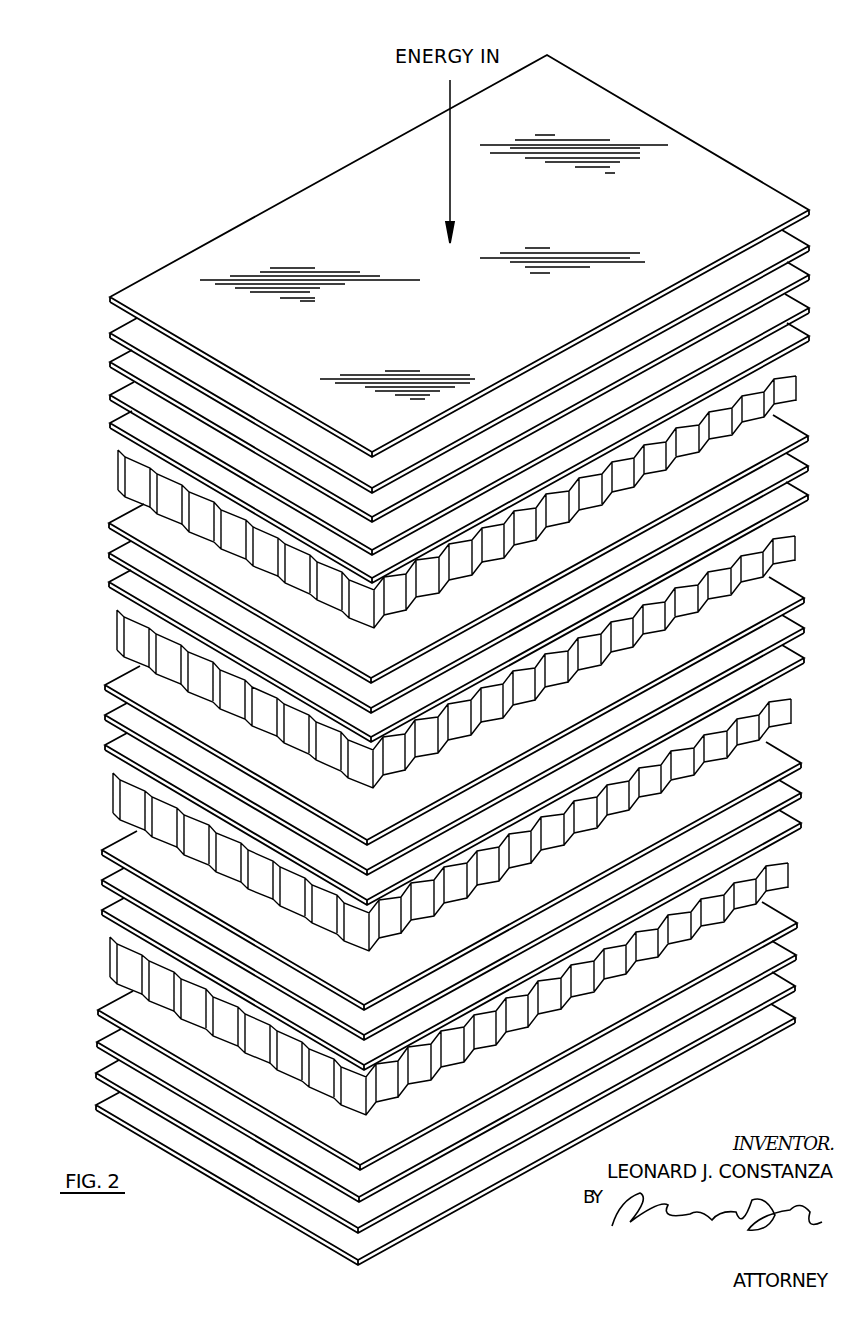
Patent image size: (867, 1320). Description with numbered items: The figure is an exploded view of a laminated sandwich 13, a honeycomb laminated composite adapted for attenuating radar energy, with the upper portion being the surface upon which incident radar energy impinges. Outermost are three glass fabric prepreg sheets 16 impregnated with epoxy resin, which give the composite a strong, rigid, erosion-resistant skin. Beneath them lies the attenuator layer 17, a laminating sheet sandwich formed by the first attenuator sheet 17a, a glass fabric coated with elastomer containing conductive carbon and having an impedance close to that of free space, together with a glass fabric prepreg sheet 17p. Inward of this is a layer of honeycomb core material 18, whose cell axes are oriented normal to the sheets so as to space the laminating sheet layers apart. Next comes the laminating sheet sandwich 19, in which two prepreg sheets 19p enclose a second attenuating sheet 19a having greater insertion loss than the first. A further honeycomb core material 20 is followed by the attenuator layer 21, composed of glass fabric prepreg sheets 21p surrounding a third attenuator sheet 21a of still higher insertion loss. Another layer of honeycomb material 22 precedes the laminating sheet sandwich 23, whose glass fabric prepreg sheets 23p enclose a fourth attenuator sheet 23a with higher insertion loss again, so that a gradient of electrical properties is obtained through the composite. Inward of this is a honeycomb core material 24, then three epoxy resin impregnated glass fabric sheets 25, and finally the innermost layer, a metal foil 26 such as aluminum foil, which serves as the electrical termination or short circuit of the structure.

The laminated sandwich 13 is at (235, 220).
The glass fabric prepreg sheets 16 is at (128, 358).
The laminating sheet sandwich (attenuator layer) 17 is at (62, 380).
The first attenuator sheet 17a is at (110, 395).
The glass fabric prepreg sheet 17p is at (110, 423).
The honeycomb core material 18 is at (128, 471).
The laminating sheet sandwich 19 is at (62, 508).
The prepreg sheets 19p is at (109, 523).
The second attenuating sheet 19a is at (109, 553).
The honeycomb core material 20 is at (125, 633).
The attenuator layer 21 is at (62, 670).
The glass fabric prepreg sheets 21p is at (105, 685).
The third attenuator sheet 21a is at (105, 715).
The honeycomb material layer 22 is at (120, 796).
The laminating sheet sandwich 23 is at (55, 834).
The glass fabric prepreg sheets 23p is at (102, 850).
The fourth attenuator sheet 23a is at (102, 880).
The honeycomb core material 24 is at (118, 966).
The epoxy resin impregnated glass fabric sheets 25 is at (106, 1064).
The metal foil 26 is at (97, 1107).